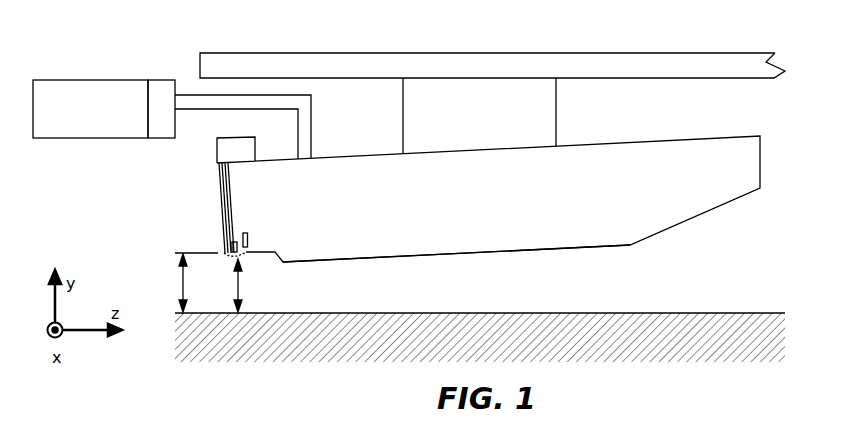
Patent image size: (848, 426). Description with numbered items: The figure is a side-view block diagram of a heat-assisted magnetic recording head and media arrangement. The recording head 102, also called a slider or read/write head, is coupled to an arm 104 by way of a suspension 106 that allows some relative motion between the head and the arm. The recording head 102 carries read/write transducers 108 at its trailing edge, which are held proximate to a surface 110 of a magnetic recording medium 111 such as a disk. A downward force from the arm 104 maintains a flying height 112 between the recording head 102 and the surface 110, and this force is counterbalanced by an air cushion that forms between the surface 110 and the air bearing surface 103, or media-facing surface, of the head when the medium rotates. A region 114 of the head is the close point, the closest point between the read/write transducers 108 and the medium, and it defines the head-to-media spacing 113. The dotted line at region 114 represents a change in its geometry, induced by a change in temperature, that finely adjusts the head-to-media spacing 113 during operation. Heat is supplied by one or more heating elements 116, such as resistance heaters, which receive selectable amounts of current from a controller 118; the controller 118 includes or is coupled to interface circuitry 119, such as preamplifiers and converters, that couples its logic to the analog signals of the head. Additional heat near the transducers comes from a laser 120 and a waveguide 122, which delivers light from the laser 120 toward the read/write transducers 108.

The recording head 102 is at (668, 140).
The air bearing surface 103 is at (366, 262).
The arm 104 is at (713, 58).
The suspension 106 is at (556, 107).
The read/write transducers 108 is at (230, 244).
The surface 110 is at (671, 313).
The magnetic recording medium 111 is at (682, 350).
The flying height 112 is at (181, 282).
The head-to-media spacing 113 is at (222, 285).
The region 114 is at (245, 258).
The heating elements 116 is at (244, 241).
The controller 118 is at (85, 80).
The interface circuitry 119 is at (157, 80).
The laser 120 is at (233, 146).
The waveguide 122 is at (222, 188).